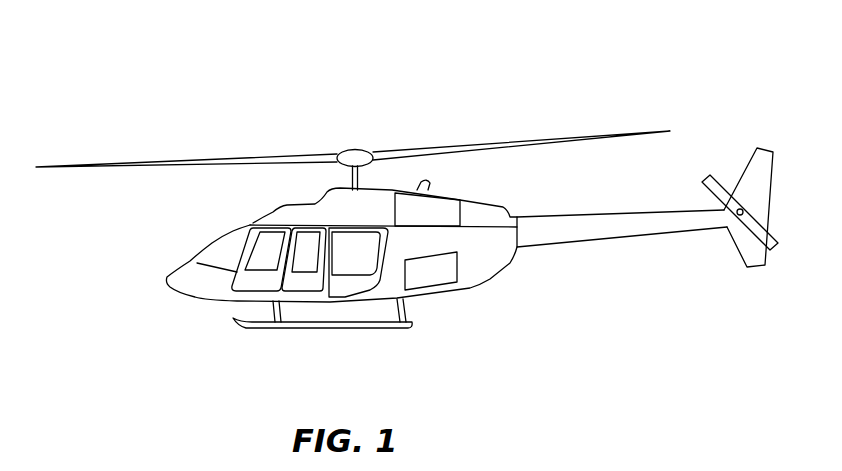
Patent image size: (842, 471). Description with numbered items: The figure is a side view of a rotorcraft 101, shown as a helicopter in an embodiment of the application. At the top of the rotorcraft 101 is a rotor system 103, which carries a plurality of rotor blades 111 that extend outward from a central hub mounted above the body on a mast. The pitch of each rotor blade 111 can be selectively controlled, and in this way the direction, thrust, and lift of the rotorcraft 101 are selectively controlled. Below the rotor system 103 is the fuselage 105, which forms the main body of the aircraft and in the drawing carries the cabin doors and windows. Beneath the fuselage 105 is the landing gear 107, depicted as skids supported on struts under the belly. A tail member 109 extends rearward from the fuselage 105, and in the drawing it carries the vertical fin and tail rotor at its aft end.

The rotorcraft 101 is at (170, 105).
The rotor system 103 is at (385, 122).
The fuselage 105 is at (222, 303).
The landing gear 107 is at (367, 330).
The tail member 109 is at (598, 240).
The rotor blade 111 is at (608, 135).